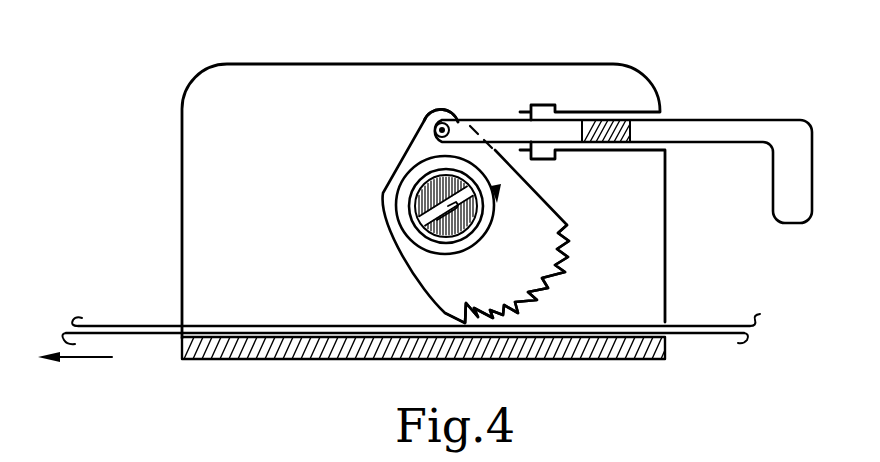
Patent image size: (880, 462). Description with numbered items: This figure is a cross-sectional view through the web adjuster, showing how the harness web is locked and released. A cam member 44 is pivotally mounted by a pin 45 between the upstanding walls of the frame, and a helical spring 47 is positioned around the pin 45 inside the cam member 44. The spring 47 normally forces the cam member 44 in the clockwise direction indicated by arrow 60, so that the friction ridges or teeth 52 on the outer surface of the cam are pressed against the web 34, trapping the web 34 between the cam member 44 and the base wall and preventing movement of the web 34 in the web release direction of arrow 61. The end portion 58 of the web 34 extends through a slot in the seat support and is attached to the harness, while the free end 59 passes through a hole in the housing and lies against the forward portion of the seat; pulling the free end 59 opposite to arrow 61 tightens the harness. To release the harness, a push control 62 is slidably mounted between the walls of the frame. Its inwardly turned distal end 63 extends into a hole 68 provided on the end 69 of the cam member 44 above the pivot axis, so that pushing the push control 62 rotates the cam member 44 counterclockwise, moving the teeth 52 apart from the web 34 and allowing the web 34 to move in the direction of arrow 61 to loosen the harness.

The web 34 is at (690, 334).
The cam member 44 is at (425, 265).
The pin 45 is at (403, 237).
The helical spring 47 is at (410, 198).
The friction ridges 52 is at (452, 312).
The end portion 58 is at (93, 328).
The free end 59 is at (716, 325).
The arrow 60 is at (430, 157).
The arrow 61 is at (93, 353).
The push control 62 is at (752, 122).
The end 63 is at (450, 122).
The hole 68 is at (426, 118).
The end 69 is at (548, 229).